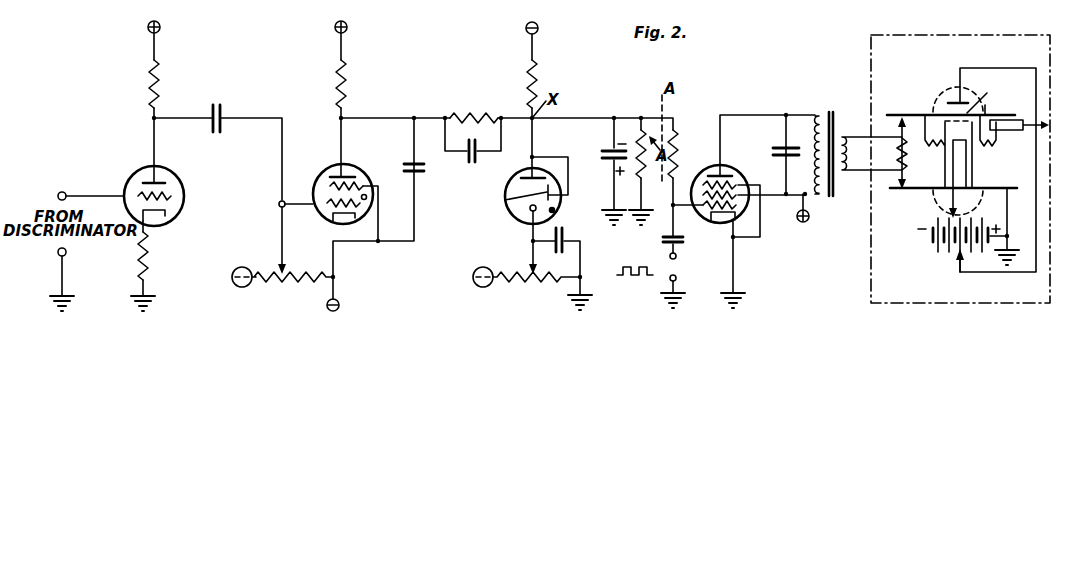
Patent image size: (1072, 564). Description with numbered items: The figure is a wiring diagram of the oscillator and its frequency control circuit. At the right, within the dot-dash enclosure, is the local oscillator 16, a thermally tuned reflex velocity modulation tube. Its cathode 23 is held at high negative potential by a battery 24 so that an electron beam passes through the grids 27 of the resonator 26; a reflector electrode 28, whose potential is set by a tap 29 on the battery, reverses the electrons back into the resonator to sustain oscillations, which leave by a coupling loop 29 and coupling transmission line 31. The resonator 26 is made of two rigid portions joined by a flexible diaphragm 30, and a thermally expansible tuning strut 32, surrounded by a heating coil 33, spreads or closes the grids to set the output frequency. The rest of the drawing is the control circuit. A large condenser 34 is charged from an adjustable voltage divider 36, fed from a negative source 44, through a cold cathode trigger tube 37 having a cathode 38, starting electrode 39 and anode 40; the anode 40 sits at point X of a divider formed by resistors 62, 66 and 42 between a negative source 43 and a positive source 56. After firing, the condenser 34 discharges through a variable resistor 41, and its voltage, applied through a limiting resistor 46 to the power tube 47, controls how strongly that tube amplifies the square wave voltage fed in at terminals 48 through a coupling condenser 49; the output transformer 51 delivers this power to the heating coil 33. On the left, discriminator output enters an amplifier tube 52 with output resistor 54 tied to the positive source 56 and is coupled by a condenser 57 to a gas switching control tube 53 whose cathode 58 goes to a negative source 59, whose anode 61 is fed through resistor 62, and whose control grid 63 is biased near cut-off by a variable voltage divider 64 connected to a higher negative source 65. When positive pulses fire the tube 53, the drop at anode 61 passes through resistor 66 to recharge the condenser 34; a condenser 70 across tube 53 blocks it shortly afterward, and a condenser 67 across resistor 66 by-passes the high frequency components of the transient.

The local oscillator 16 is at (961, 34).
The cathode 23 is at (969, 152).
The battery 24 is at (928, 249).
The resonator 26 is at (989, 108).
The grids 27 is at (978, 97).
The reflector electrode 28 is at (956, 96).
The tap on battery 29 is at (977, 137).
The flexible diaphragm 30 is at (943, 153).
The coupling transmission line 31 is at (1000, 133).
The tuning strut 32 is at (903, 120).
The heating coil 33 is at (902, 164).
The condenser 34 is at (605, 166).
The voltage divider 36 is at (540, 285).
The trigger tube 37 is at (526, 175).
The cold cathode 38 is at (527, 212).
The starting electrode 39 is at (505, 200).
The anode 40 is at (524, 178).
The resistor 41 is at (642, 124).
The resistor 42 is at (527, 85).
The negative potential source 43 is at (550, 22).
The source of negative potential 44 is at (484, 289).
The grid-current limiting resistor 46 is at (676, 152).
The power tube 47 is at (750, 215).
The terminals 48 is at (668, 278).
The coupling condenser 49 is at (680, 244).
The output transformer 51 is at (828, 114).
The amplifier tube 52 is at (178, 182).
The gas switching control tube 53 is at (330, 169).
The output resistor 54 is at (149, 89).
The positive potential source 56 is at (148, 25).
The coupling condenser 57 is at (222, 112).
The cathode 58 is at (342, 218).
The source of negative potential 59 is at (340, 307).
The anode 61 is at (355, 173).
The resistor 62 is at (348, 90).
The control grid 63 is at (366, 203).
The variable voltage divider 64 is at (290, 289).
The source of higher negative potential 65 is at (236, 290).
The resistor 66 is at (473, 112).
The condenser 67 is at (466, 159).
The condenser 70 is at (418, 174).